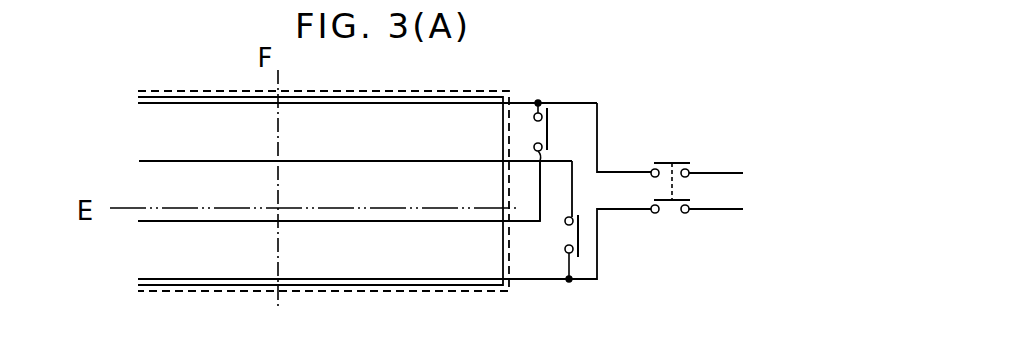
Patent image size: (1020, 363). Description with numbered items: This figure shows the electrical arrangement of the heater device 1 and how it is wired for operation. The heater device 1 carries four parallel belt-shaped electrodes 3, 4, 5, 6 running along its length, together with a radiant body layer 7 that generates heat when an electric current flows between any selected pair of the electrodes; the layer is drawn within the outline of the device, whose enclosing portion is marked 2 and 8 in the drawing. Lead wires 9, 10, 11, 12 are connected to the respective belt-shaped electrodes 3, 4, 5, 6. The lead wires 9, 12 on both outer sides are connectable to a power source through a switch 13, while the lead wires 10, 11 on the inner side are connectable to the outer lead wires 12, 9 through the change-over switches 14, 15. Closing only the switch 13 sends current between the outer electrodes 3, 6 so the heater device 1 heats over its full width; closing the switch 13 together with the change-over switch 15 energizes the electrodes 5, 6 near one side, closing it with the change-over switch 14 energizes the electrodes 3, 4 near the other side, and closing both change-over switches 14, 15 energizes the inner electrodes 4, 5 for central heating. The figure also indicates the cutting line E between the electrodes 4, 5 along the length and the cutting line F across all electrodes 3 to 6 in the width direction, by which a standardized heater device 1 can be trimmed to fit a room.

The heater device 1 is at (185, 296).
The shield (dashed enclosure) 2 is at (323, 219).
The shield 8 is at (453, 292).
The belt-shaped electrode 3 is at (388, 100).
The belt-shaped electrode 4 is at (413, 161).
The belt-shaped electrode 5 is at (383, 227).
The belt-shaped electrode 6 is at (375, 283).
The radiant body layer 7 is at (247, 293).
The lead wire 9 is at (583, 100).
The lead wire 10 is at (573, 158).
The lead wire 11 is at (528, 225).
The lead wire 12 is at (597, 260).
The switch 13 is at (668, 212).
The change-over switch 14 is at (580, 230).
The change-over switch 15 is at (535, 133).